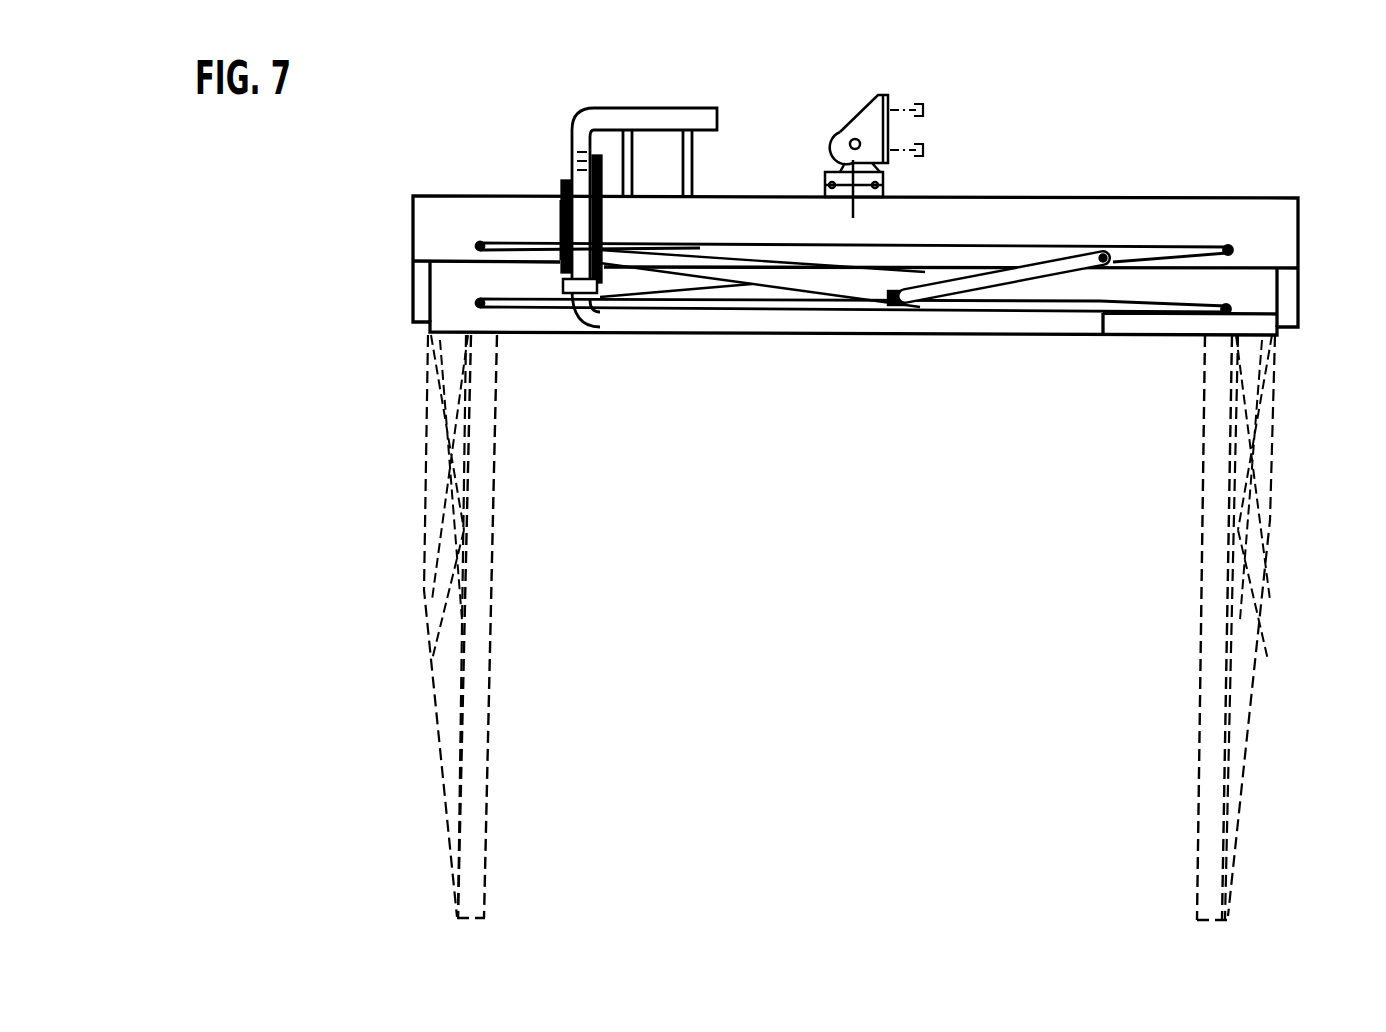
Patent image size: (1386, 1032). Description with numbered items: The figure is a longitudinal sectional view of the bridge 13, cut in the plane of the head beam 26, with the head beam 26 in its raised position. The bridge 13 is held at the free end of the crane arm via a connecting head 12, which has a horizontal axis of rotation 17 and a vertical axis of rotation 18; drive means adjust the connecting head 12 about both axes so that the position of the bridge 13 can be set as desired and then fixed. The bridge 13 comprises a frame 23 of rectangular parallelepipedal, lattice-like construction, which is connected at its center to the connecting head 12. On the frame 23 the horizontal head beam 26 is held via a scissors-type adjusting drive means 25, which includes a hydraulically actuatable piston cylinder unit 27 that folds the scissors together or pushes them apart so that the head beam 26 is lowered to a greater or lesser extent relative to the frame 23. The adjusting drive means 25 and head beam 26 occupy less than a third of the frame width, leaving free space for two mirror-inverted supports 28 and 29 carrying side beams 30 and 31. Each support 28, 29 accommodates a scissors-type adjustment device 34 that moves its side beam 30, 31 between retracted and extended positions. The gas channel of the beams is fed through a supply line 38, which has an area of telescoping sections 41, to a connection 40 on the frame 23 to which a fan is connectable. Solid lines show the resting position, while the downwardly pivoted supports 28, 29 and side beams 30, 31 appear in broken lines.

The connecting head 12 is at (900, 91).
The bridge 13 is at (1134, 192).
The horizontal axis of rotation 17 is at (853, 141).
The vertical axis of rotation 18 is at (826, 172).
The frame 23 is at (1239, 225).
The scissors-type adjusting drive means 25 is at (815, 278).
The head beam 26 is at (891, 342).
The piston cylinder unit 27 is at (1013, 272).
The support 28 is at (427, 527).
The support 29 is at (1270, 542).
The side beam 30 is at (490, 633).
The side beam 31 is at (1215, 627).
The scissors-type adjustment device 34 is at (450, 522).
The supply line 38 is at (552, 216).
The connection 40 is at (613, 110).
The sections 41 is at (566, 176).